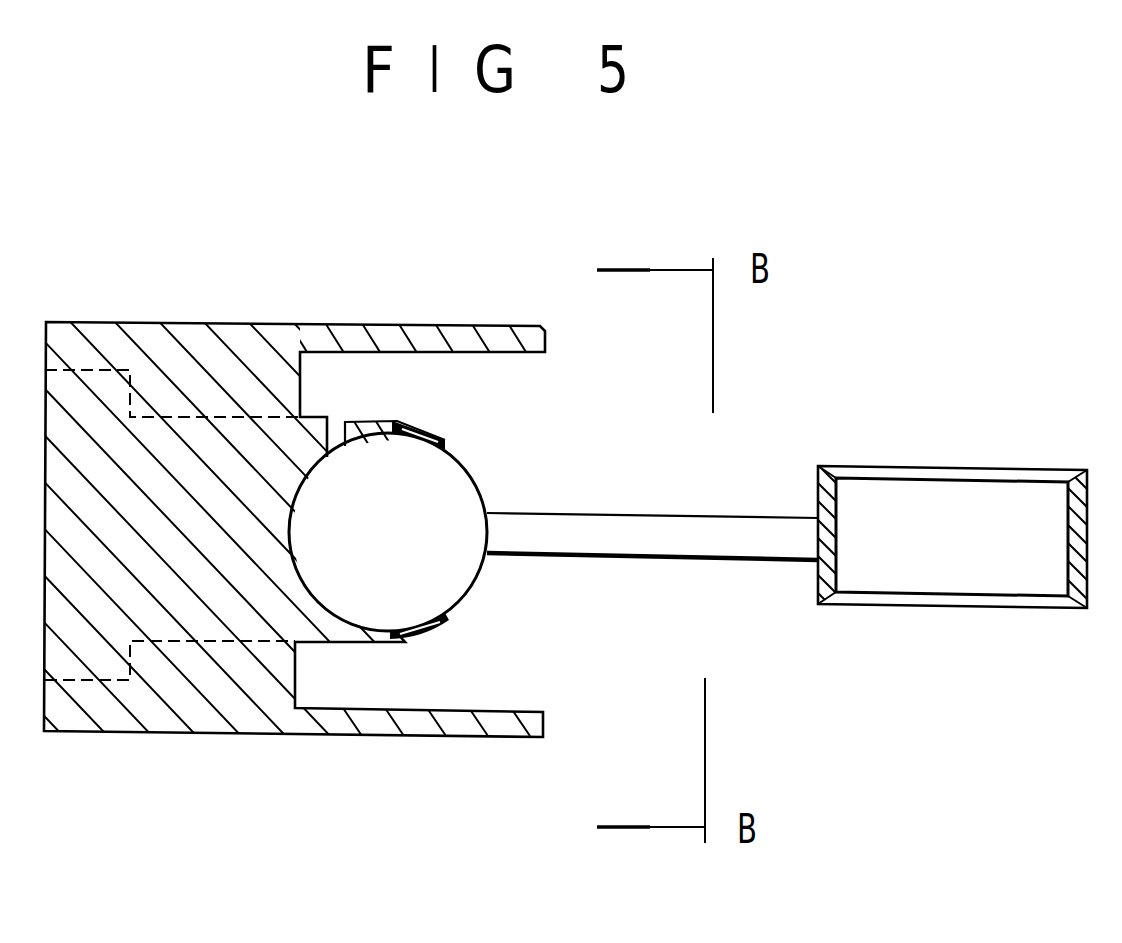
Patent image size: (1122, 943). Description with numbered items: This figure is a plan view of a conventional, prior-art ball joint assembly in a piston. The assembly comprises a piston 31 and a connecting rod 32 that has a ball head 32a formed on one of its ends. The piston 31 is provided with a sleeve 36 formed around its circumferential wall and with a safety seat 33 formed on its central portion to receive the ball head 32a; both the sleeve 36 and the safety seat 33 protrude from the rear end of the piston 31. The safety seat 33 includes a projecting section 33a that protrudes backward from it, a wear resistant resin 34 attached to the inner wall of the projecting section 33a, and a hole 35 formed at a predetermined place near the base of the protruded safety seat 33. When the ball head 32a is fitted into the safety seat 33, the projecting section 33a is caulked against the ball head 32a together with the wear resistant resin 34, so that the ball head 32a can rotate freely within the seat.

The piston 31 is at (150, 336).
The connecting rod 32 is at (778, 528).
The ball head 32a is at (458, 498).
The safety seat 33 is at (302, 577).
The projecting section 33a is at (440, 630).
The wear resistant resin 34 is at (407, 638).
The hole 35 is at (338, 433).
The sleeve 36 is at (452, 340).